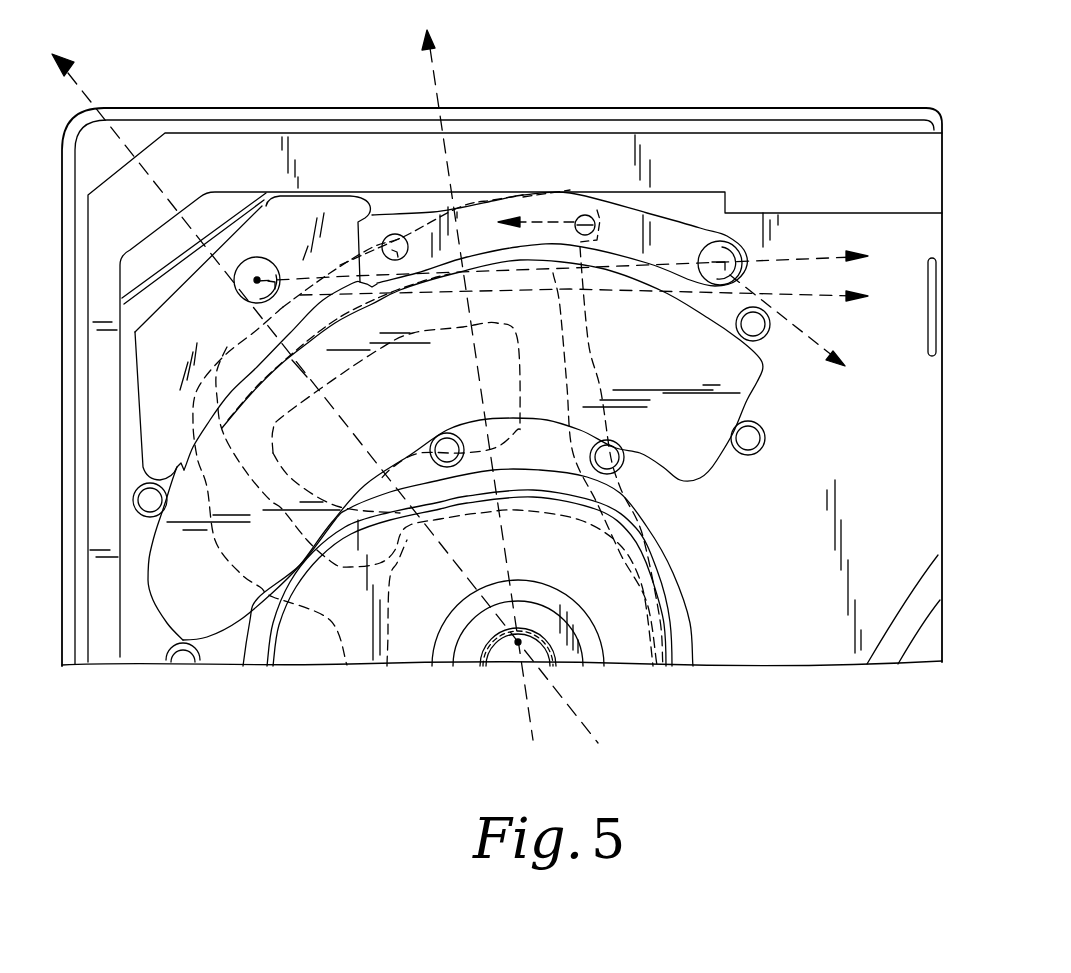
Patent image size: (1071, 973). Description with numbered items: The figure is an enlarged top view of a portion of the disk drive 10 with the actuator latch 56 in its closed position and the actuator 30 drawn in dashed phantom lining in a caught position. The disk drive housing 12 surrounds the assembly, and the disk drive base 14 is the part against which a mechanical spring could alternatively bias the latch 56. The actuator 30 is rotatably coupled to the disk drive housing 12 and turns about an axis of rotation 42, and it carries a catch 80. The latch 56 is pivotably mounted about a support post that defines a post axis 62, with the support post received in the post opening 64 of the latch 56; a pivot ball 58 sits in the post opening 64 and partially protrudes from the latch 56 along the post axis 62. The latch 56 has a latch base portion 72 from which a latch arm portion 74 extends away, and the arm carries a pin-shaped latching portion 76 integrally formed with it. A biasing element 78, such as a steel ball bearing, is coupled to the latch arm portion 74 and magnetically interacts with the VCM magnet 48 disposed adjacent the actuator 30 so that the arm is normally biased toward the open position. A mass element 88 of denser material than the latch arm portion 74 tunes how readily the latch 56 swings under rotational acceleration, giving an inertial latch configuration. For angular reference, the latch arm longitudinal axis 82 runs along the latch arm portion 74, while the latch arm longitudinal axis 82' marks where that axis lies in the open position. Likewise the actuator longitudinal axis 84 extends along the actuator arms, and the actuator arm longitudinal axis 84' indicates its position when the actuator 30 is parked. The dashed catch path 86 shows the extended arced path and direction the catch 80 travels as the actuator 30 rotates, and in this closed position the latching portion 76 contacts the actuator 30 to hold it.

The disk drive 10 is at (660, 72).
The disk drive housing 12 is at (310, 155).
The disk drive base 14 is at (360, 157).
The actuator 30 is at (597, 364).
The axis of rotation 42 is at (518, 642).
The VCM magnet 48 is at (219, 591).
The actuator latch 56 is at (278, 334).
The pivot ball 58 is at (266, 257).
The post axis 62 is at (256, 276).
The post opening 64 is at (234, 260).
The latch base portion 72 is at (177, 308).
The latch arm portion 74 is at (478, 230).
The latching portion 76 is at (587, 216).
The biasing element 78 is at (395, 238).
The catch 80 is at (600, 227).
The latch arm longitudinal axis 82 is at (562, 249).
The latch arm longitudinal axis in open position 82' is at (589, 313).
The actuator longitudinal axis 84 is at (325, 398).
The actuator arm longitudinal axis in parked position 84' is at (477, 385).
The catch path 86 is at (820, 340).
The mass element 88 is at (733, 251).